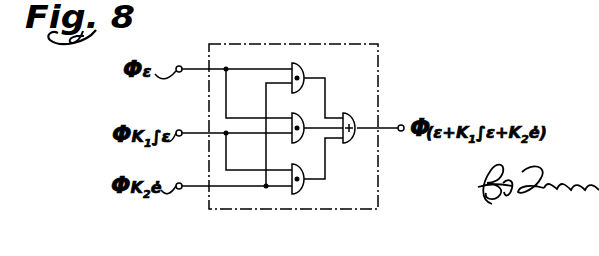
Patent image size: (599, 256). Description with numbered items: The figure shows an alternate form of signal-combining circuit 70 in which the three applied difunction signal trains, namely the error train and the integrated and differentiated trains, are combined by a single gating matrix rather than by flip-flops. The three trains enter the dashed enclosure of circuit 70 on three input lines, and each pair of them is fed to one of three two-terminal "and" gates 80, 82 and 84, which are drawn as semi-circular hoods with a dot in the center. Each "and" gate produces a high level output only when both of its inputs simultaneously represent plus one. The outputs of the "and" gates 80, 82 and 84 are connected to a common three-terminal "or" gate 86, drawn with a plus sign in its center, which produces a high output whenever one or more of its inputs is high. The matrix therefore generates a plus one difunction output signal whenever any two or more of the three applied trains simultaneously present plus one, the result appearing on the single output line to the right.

The signal-combining circuit 70 is at (380, 188).
The two-terminal "and" gate 80 is at (300, 63).
The two-terminal "and" gate 82 is at (301, 114).
The two-terminal "and" gate 84 is at (306, 186).
The three-terminal "or" gate 86 is at (352, 113).